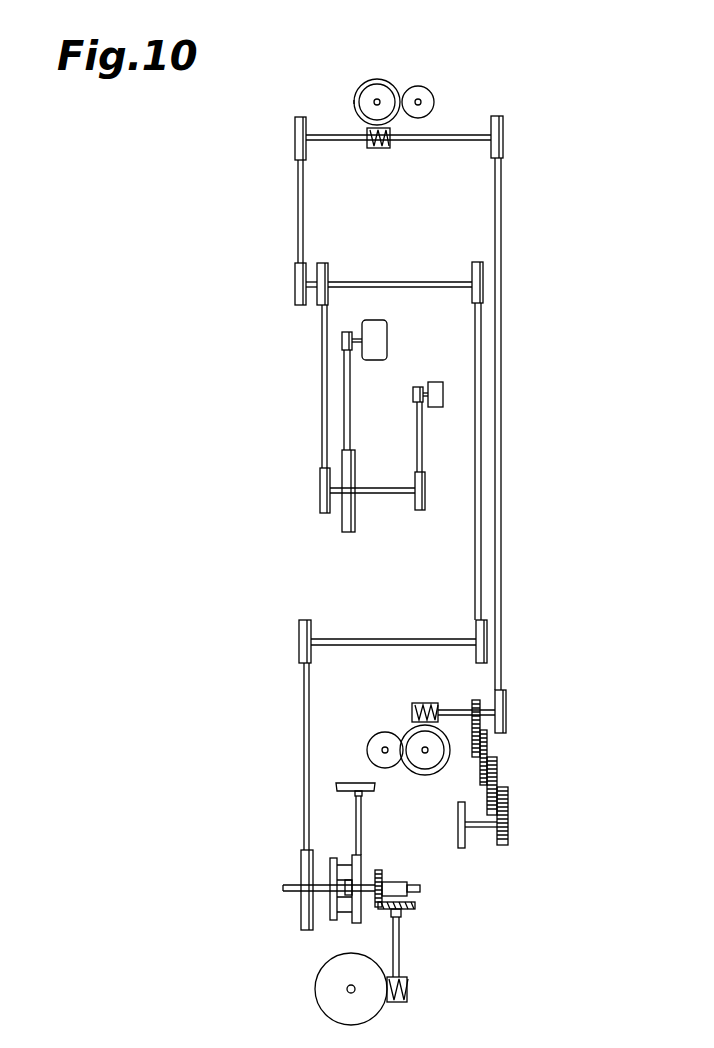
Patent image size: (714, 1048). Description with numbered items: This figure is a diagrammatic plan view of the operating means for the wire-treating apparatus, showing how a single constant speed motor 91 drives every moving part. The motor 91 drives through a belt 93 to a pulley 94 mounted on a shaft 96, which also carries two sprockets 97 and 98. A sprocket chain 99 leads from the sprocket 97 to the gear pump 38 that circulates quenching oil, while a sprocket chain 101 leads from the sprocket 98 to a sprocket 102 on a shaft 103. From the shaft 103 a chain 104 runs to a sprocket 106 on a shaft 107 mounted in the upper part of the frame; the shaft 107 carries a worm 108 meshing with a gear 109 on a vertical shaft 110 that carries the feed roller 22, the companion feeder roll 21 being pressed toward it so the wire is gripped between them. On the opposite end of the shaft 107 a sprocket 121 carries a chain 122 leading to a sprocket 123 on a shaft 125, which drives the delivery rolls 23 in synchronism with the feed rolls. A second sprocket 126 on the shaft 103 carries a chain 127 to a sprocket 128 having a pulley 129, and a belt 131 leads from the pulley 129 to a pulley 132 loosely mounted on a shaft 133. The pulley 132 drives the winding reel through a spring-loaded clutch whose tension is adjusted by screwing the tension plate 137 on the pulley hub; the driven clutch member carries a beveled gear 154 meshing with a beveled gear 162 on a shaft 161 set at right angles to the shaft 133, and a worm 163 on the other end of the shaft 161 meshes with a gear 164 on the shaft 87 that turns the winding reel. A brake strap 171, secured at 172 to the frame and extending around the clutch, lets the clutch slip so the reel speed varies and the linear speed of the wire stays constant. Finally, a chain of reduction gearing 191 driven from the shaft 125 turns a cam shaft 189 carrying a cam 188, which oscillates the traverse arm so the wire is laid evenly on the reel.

The feeder roll 21 is at (425, 84).
The feeder roll 22 is at (363, 80).
The delivery rolls 23 is at (393, 768).
The pump 38 is at (452, 372).
The shaft 87 is at (347, 990).
The constant speed motor 91 is at (381, 332).
The belt 93 is at (350, 390).
The pulley 94 is at (355, 522).
The shaft 96 is at (375, 494).
The sprocket 97 is at (424, 505).
The sprocket 98 is at (320, 502).
The sprocket chain 99 is at (417, 440).
The sprocket chain 101 is at (322, 403).
The sprocket 102 is at (330, 268).
The shaft 103 is at (387, 280).
The chain 104 is at (298, 213).
The sprocket 106 is at (295, 121).
The shaft 107 is at (322, 133).
The worm 108 is at (378, 149).
The gear 109 is at (353, 90).
The vertical shaft 110 is at (377, 99).
The sprocket 121 is at (503, 134).
The chain 122 is at (501, 197).
The sprocket 123 is at (506, 710).
The shaft 125 is at (458, 686).
The second sprocket 126 is at (472, 267).
The chain 127 is at (476, 572).
The sprocket 128 is at (476, 623).
The pulley 129 is at (299, 628).
The belt 131 is at (304, 693).
The pulley 132 is at (301, 856).
The shaft 133 is at (283, 888).
The tension plate 137 is at (332, 860).
The beveled gear 154 is at (378, 872).
The shaft 161 is at (399, 948).
The beveled gear 162 is at (415, 905).
The worm 163 is at (407, 985).
The gear 164 is at (317, 975).
The strap 171 is at (361, 823).
The securing point 172 is at (356, 792).
The cam 188 is at (482, 828).
The cam shaft 189 is at (462, 848).
The reduction gearing 191 is at (498, 780).